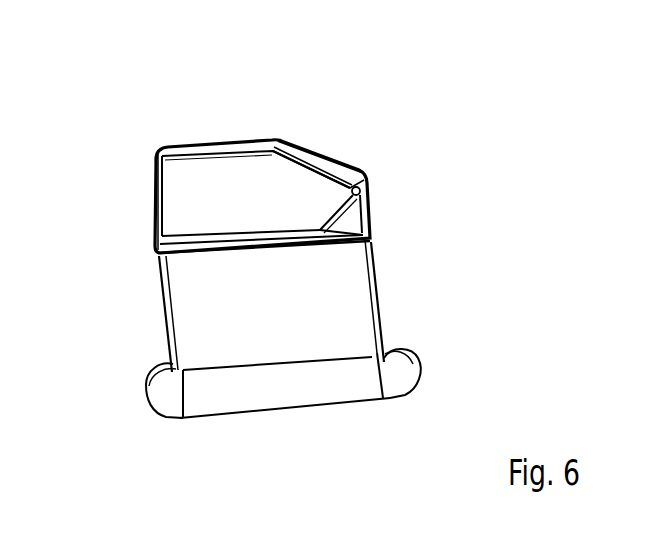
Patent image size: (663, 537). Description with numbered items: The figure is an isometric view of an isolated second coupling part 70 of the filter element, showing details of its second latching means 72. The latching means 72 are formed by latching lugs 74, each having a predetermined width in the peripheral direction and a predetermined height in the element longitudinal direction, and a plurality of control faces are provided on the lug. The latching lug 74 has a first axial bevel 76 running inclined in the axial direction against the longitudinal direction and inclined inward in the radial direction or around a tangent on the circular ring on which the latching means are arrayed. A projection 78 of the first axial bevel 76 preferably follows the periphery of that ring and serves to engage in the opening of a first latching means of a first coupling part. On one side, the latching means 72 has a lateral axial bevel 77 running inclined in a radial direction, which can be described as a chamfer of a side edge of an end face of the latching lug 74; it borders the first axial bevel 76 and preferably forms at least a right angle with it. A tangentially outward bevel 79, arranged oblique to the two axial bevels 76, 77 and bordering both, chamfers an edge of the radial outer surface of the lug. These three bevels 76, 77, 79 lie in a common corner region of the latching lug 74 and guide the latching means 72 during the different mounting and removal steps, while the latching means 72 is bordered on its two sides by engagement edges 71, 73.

The second coupling part 70 is at (410, 112).
The engagement edge 71 is at (368, 190).
The second latching means 72 is at (390, 257).
The engagement edge 73 is at (151, 212).
The latching lug 74 is at (226, 213).
The first axial bevel 76 is at (205, 188).
The lateral axial bevel 77 is at (331, 158).
The projection 78 is at (248, 242).
The tangential bevel 79 is at (358, 218).